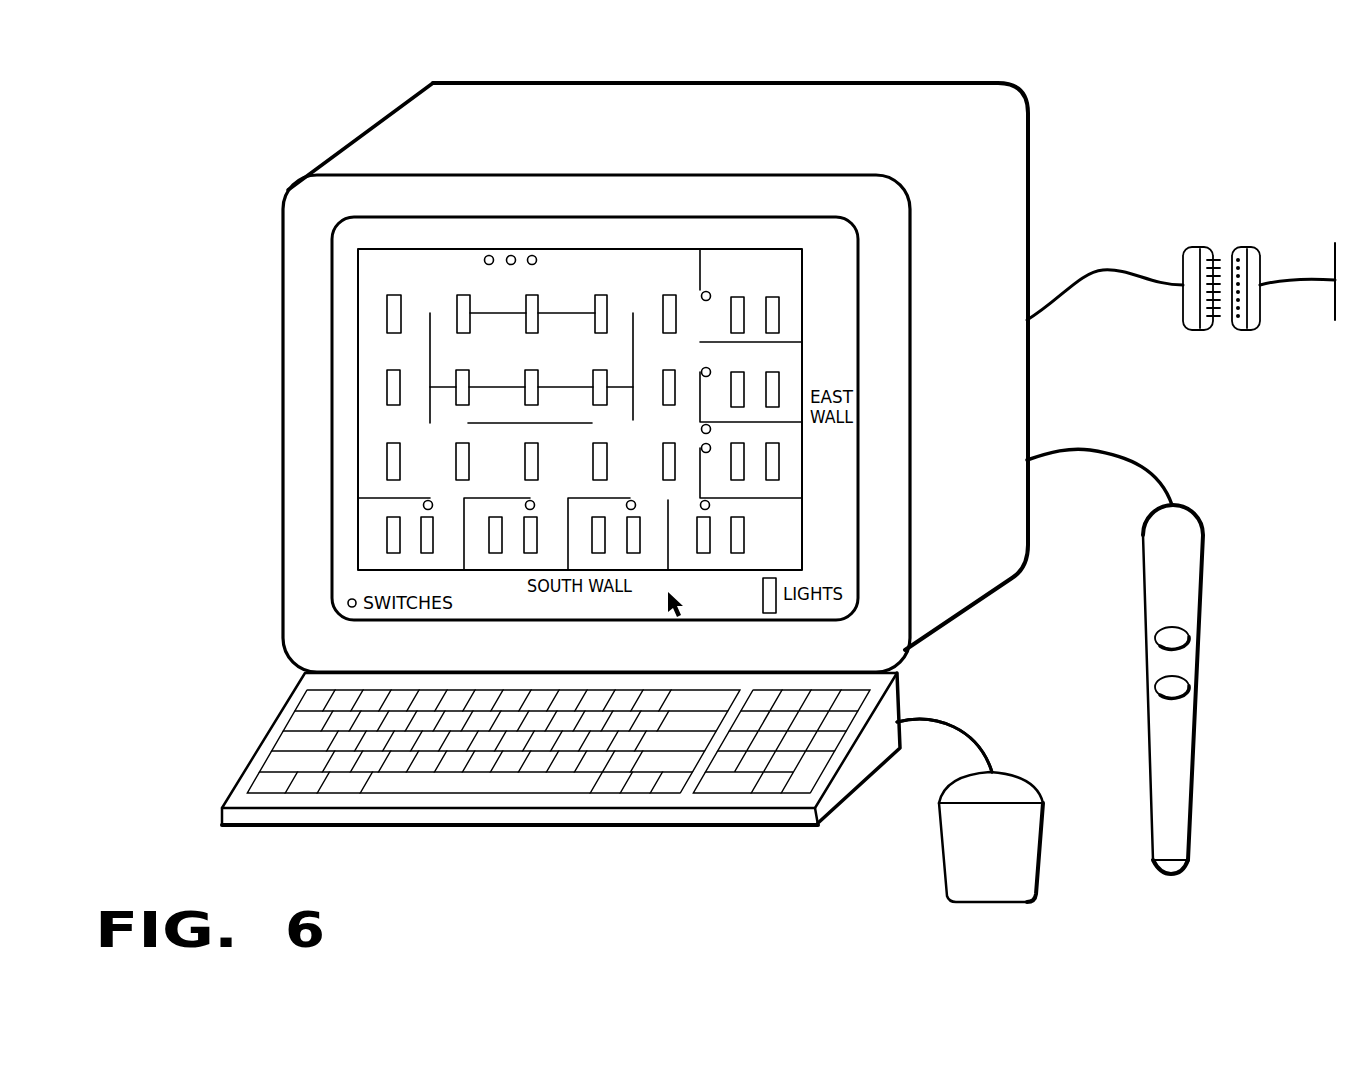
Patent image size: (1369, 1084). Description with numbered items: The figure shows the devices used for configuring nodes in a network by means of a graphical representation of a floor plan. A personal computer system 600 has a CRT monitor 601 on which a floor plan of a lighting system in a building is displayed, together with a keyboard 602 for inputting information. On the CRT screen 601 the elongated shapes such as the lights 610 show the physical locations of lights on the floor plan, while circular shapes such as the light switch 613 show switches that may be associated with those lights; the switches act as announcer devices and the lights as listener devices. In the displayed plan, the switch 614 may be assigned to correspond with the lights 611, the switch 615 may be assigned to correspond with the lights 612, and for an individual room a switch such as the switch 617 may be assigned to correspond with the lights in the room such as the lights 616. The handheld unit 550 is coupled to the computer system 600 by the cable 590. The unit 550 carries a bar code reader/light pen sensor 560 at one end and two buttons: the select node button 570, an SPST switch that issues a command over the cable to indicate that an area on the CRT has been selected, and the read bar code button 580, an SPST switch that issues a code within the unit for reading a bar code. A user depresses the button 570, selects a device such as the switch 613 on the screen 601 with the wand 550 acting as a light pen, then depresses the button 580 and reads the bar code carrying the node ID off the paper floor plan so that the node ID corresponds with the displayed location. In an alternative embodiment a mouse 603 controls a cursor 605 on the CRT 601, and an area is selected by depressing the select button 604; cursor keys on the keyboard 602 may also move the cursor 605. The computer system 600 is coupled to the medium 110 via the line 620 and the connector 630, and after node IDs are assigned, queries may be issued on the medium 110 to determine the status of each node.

The computer system 600 is at (995, 98).
The CRT monitor 601 is at (282, 385).
The keyboard 602 is at (793, 823).
The mouse 603 is at (1022, 892).
The select button 604 is at (1013, 786).
The cursor 605 is at (680, 603).
The lights 610 is at (391, 296).
The lights 611 is at (384, 372).
The lights 612 is at (385, 455).
The light switch 613 is at (486, 255).
The switch 614 is at (510, 255).
The switch 615 is at (533, 255).
The lights in the room 616 is at (384, 530).
The switch 617 is at (427, 500).
The line 620 is at (1061, 296).
The connector 630 is at (1200, 250).
The medium 110 is at (1337, 296).
The cable 590 is at (1114, 450).
The bar code reader/light pen unit 550 is at (1186, 552).
The select node button 570 is at (1182, 637).
The read bar code button 580 is at (1200, 697).
The bar code reader/light pen sensor 560 is at (1186, 871).